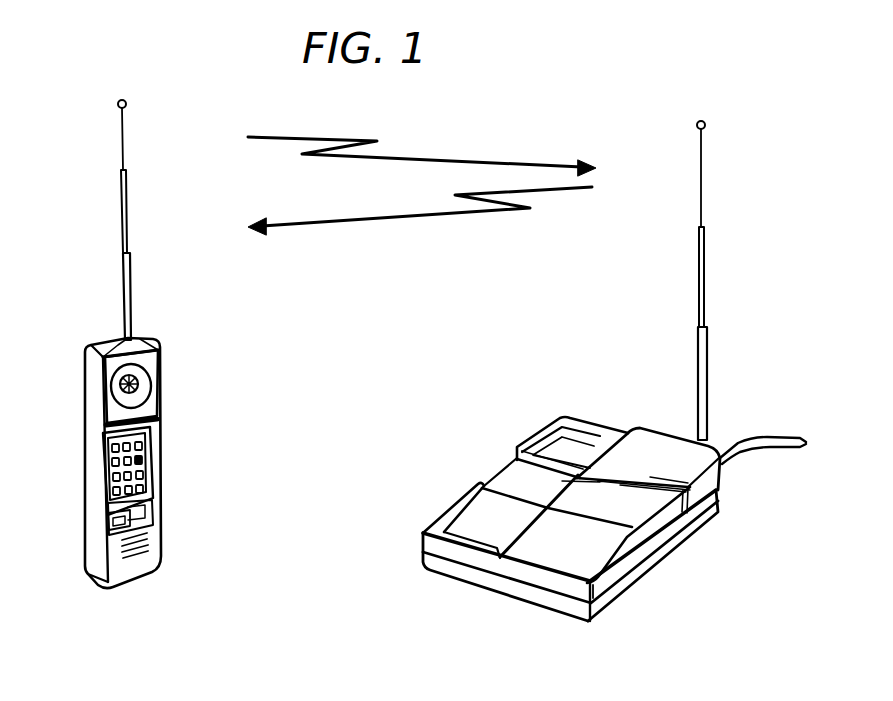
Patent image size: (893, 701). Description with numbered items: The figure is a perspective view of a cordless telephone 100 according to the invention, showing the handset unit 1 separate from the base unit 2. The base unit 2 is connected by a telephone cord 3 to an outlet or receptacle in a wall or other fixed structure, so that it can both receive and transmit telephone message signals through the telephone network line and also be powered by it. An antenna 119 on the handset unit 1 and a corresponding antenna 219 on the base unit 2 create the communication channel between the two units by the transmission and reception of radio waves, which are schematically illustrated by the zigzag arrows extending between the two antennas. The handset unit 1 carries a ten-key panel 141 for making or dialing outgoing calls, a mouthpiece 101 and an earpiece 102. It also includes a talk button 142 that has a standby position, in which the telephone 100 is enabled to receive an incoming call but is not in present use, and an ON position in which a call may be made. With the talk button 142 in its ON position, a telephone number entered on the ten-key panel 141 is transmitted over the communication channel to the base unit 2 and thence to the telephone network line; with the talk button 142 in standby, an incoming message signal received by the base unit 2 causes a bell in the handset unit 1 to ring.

The handset unit 1 is at (140, 575).
The cordless telephone 100 is at (392, 408).
The mouthpiece 101 is at (147, 542).
The earpiece 102 is at (136, 385).
The antenna 119 is at (130, 257).
The ten-key panel 141 is at (139, 459).
The talk button 142 is at (108, 573).
The base unit 2 is at (668, 550).
The antenna 219 is at (700, 347).
The telephone cord 3 is at (748, 450).